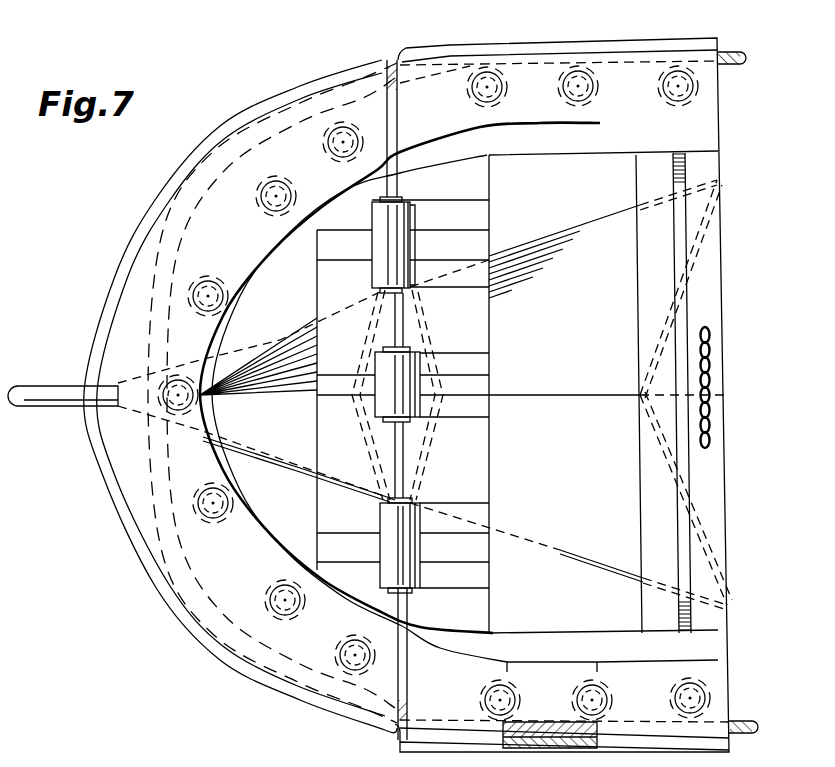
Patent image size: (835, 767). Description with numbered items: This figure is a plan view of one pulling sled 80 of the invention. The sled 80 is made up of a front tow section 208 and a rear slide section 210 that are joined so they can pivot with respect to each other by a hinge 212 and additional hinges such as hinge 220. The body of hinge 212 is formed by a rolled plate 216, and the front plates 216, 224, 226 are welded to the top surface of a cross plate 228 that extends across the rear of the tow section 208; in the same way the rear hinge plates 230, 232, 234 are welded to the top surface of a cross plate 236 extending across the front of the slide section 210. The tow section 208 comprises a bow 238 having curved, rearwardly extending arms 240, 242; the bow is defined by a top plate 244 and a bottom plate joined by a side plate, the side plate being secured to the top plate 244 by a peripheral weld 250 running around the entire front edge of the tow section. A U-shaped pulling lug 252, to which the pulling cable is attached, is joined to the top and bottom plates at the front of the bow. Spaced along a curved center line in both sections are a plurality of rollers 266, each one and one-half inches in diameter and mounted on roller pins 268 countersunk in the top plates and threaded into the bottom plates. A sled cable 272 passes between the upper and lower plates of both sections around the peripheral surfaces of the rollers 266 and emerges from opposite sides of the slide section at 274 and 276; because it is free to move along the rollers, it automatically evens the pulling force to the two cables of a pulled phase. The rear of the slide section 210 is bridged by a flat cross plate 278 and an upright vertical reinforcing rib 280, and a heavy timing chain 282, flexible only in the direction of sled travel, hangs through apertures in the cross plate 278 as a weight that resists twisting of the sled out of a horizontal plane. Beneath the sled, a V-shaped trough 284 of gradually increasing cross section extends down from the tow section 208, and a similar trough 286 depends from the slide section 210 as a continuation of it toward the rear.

The pulling sled 80 is at (140, 206).
The tow section 208 is at (153, 253).
The slide section 210 is at (533, 77).
The hinge 212 is at (390, 547).
The rolled plate 216 is at (337, 550).
The hinge 220 is at (415, 365).
The front plate 224 is at (330, 390).
The front plate 226 is at (333, 255).
The cross plate 228 is at (330, 290).
The rear hinge plate 230 is at (477, 216).
The rear hinge plate 232 is at (480, 401).
The rear hinge plate 234 is at (480, 572).
The cross plate 236 is at (477, 618).
The bow 238 is at (125, 478).
The arm 240 is at (298, 122).
The arm 242 is at (170, 553).
The top plate 244 is at (205, 596).
The peripheral weld 250 is at (246, 662).
The U-shaped pulling lug 252 is at (30, 398).
The roller 266 is at (255, 185).
The roller pin 268 is at (580, 90).
The sled cable 272 is at (388, 62).
The cable emergence point 274 is at (735, 52).
The cable emergence point 276 is at (745, 720).
The flat cross plate 278 is at (706, 270).
The upright vertical reinforcing rib 280 is at (677, 312).
The timing chain 282 is at (710, 362).
The V-shaped trough 284 is at (262, 450).
The trough 286 is at (553, 290).